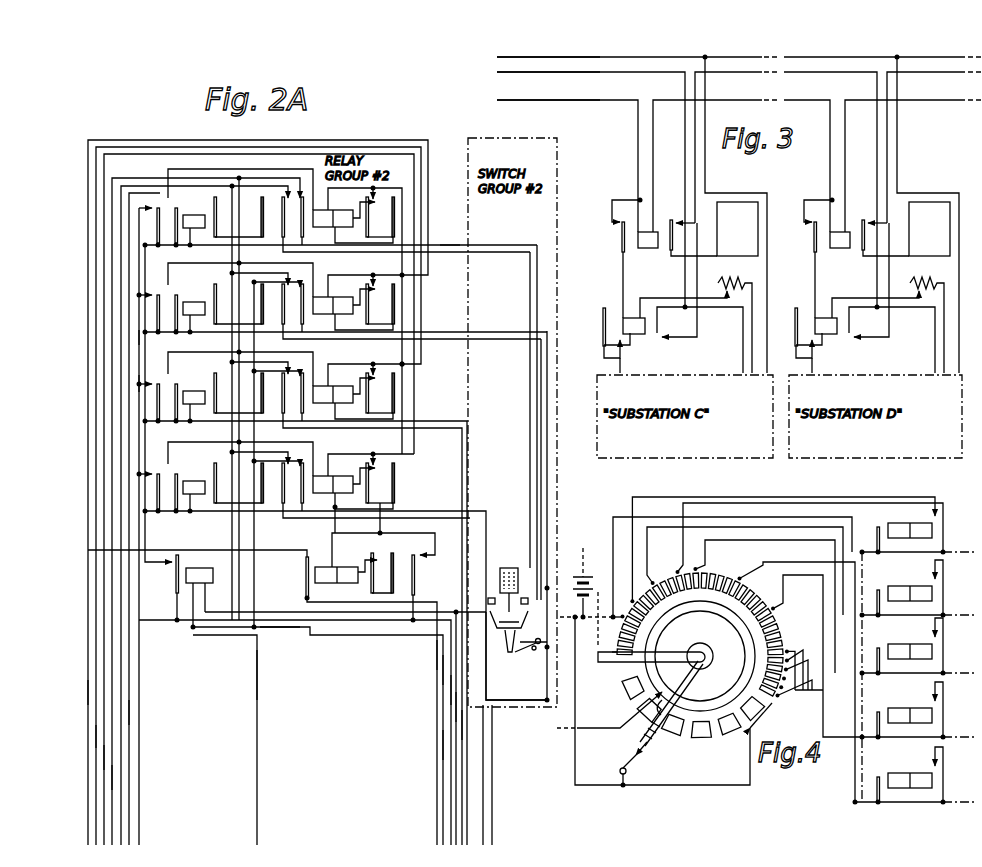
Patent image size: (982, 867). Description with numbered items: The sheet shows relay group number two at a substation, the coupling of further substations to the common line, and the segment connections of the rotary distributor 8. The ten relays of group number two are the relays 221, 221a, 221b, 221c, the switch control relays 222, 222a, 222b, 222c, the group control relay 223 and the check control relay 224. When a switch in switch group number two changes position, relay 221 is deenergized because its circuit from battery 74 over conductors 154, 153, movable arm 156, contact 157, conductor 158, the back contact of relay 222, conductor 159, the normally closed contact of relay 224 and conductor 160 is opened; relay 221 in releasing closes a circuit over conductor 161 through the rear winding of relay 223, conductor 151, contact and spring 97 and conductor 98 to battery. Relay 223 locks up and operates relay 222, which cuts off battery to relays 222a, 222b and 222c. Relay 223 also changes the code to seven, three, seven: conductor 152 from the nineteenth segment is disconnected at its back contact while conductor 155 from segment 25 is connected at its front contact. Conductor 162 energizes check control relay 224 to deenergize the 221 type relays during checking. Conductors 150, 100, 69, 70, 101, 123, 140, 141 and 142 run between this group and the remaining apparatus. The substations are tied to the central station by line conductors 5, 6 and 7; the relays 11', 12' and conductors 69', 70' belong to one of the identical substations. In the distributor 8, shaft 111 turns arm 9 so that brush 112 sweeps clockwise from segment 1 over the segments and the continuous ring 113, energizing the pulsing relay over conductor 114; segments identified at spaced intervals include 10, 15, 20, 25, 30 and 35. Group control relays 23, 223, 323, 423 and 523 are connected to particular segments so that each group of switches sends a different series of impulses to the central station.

In FIG. 2A, the relay 221 is at (200, 203).
In FIG. 2A, the relay 221a is at (189, 303).
In FIG. 2A, the relay 221b is at (189, 392).
In FIG. 2A, the relay 221c is at (189, 482).
In FIG. 2A, the switch control relay 222 is at (333, 227).
In FIG. 2A, the switch control relay 222a is at (331, 314).
In FIG. 2A, the switch control relay 222b is at (342, 373).
In FIG. 2A, the switch control relay 222c is at (341, 463).
In FIG. 2A, the group control relay 223 is at (336, 584).
In FIG. 4, the group control relay 223 is at (910, 723).
In FIG. 2A, the check control relay 224 is at (216, 568).
In FIG. 2A, the conductor 158 is at (467, 236).
In FIG. 2A, the conductor 159 is at (137, 335).
In FIG. 2A, the conductor 161 is at (139, 382).
In FIG. 2A, the conductor 160 is at (140, 665).
In FIG. 2A, the conductor 154 is at (258, 665).
In FIG. 2A, the conductor 153 is at (280, 628).
In FIG. 2A, the conductor 150 is at (437, 657).
In FIG. 2A, the conductor 151 is at (443, 667).
In FIG. 2A, the conductor 152 is at (451, 686).
In FIG. 2A, the conductor 155 is at (456, 703).
In FIG. 2A, the conductor 162 is at (462, 721).
In FIG. 2A, the conductor 100 is at (445, 740).
In FIG. 2A, the conductor 69 is at (505, 775).
In FIG. 2A, the conductor 70 is at (509, 775).
In FIG. 2A, the conductor 101 is at (88, 691).
In FIG. 2A, the conductor 123 is at (129, 712).
In FIG. 2A, the conductor 140 is at (96, 736).
In FIG. 2A, the conductor 141 is at (104, 757).
In FIG. 2A, the conductor 142 is at (112, 777).
In FIG. 2A, the movable arm 156 is at (503, 658).
In FIG. 2A, the contact 157 is at (531, 653).
In FIG. 3, the line conductor 5 is at (533, 60).
In FIG. 4, the line conductor 5 is at (615, 609).
In FIG. 3, the line conductor 6 is at (533, 78).
In FIG. 3, the line conductor 7 is at (533, 106).
In FIG. 3, the relay 11' is at (648, 252).
In FIG. 3, the relay 12' is at (631, 311).
In FIG. 3, the conductor 69' is at (752, 215).
In FIG. 3, the conductor 70' is at (735, 315).
In FIG. 4, the battery 74 is at (598, 578).
In FIG. 4, the motor 10 is at (745, 571).
In FIG. 4, the common control relay 15 is at (761, 606).
In FIG. 4, the power switch 20 is at (750, 580).
In FIG. 4, the relay 25 is at (816, 656).
In FIG. 4, the selector 30 is at (795, 660).
In FIG. 4, the segment 35 is at (800, 676).
In FIG. 4, the segment 1 is at (610, 670).
In FIG. 4, the distributor 8 is at (700, 656).
In FIG. 4, the arm 9 is at (676, 672).
In FIG. 4, the shaft 111 is at (660, 650).
In FIG. 4, the conducting brush 112 is at (695, 700).
In FIG. 4, the continuous conducting ring 113 is at (728, 669).
In FIG. 4, the conductor 114 is at (586, 728).
In FIG. 4, the conductor 98 is at (586, 785).
In FIG. 4, the contact 97 is at (645, 757).
In FIG. 4, the group control relay 523 is at (910, 538).
In FIG. 4, the group control relay 423 is at (910, 601).
In FIG. 4, the group control relay 323 is at (910, 659).
In FIG. 4, the group control relay 23 is at (910, 788).